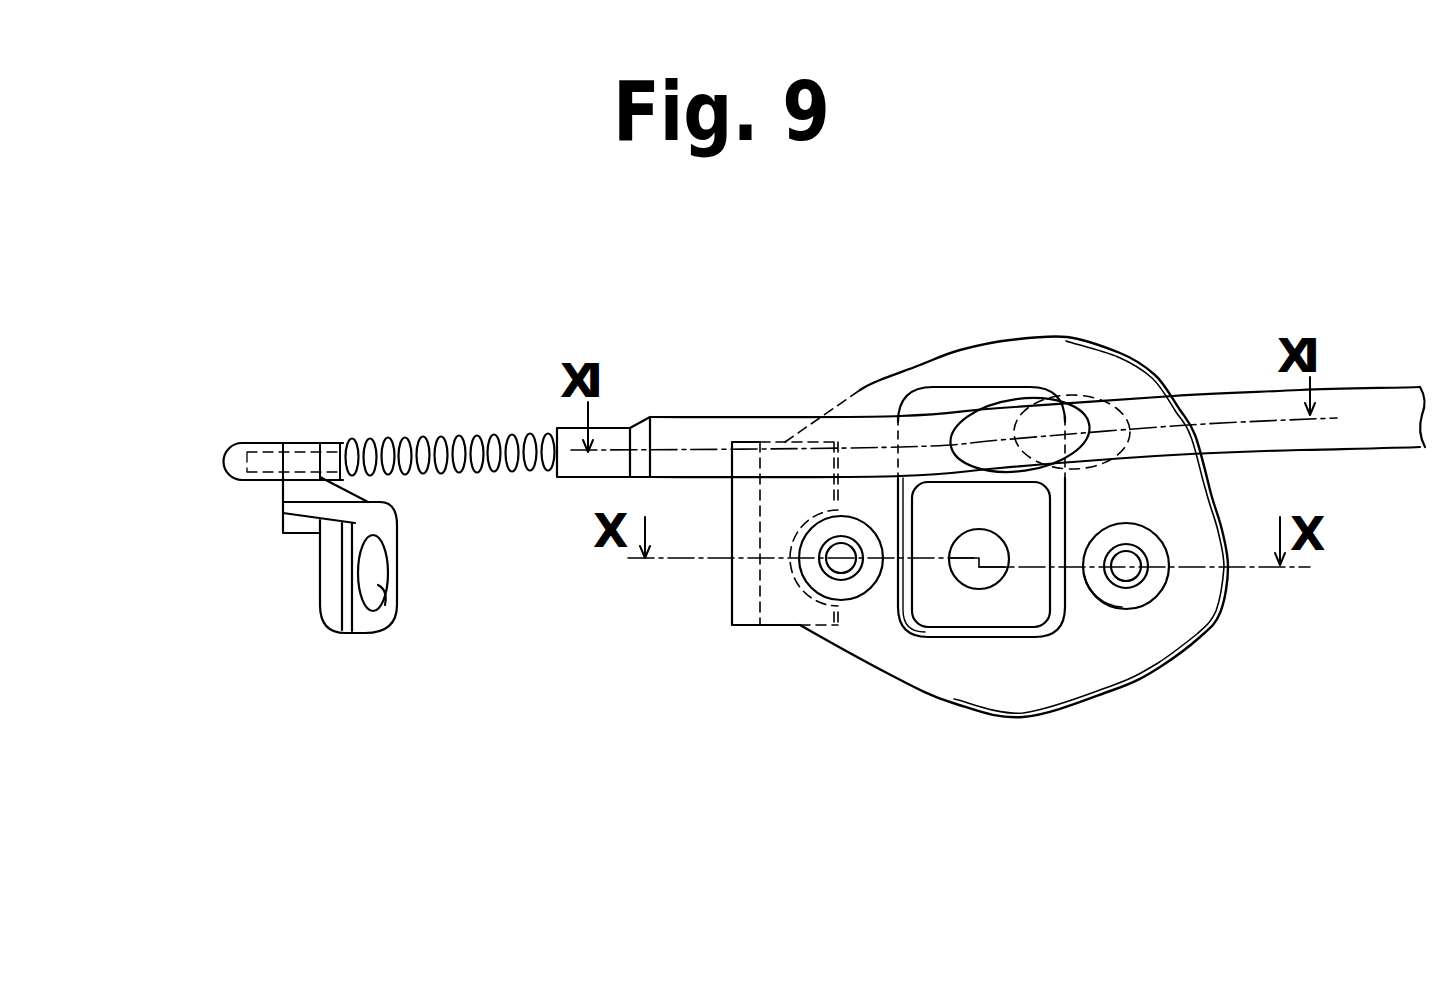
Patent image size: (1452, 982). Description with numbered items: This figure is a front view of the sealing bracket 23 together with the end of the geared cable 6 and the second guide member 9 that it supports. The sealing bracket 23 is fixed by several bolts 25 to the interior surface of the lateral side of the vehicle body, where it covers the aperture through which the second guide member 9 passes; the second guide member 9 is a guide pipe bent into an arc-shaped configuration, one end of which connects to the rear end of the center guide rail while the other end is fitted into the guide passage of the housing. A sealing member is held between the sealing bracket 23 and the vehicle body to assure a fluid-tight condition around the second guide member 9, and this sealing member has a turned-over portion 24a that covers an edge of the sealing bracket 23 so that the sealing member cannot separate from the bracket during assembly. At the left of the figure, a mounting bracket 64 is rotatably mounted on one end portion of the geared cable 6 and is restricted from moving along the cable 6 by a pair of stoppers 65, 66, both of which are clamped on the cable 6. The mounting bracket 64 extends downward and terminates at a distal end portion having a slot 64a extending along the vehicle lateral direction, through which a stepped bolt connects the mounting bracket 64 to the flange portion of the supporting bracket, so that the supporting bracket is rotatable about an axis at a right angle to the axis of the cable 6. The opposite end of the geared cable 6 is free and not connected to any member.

The geared cable 6 is at (420, 447).
The second guide member 9 is at (1390, 407).
The sealing bracket 23 is at (1067, 690).
The turned-over portion 24a is at (740, 600).
The bolts 25 is at (847, 565).
The mounting bracket 64 is at (327, 597).
The slot 64a is at (387, 603).
The stopper 65 is at (232, 455).
The stopper 66 is at (327, 443).